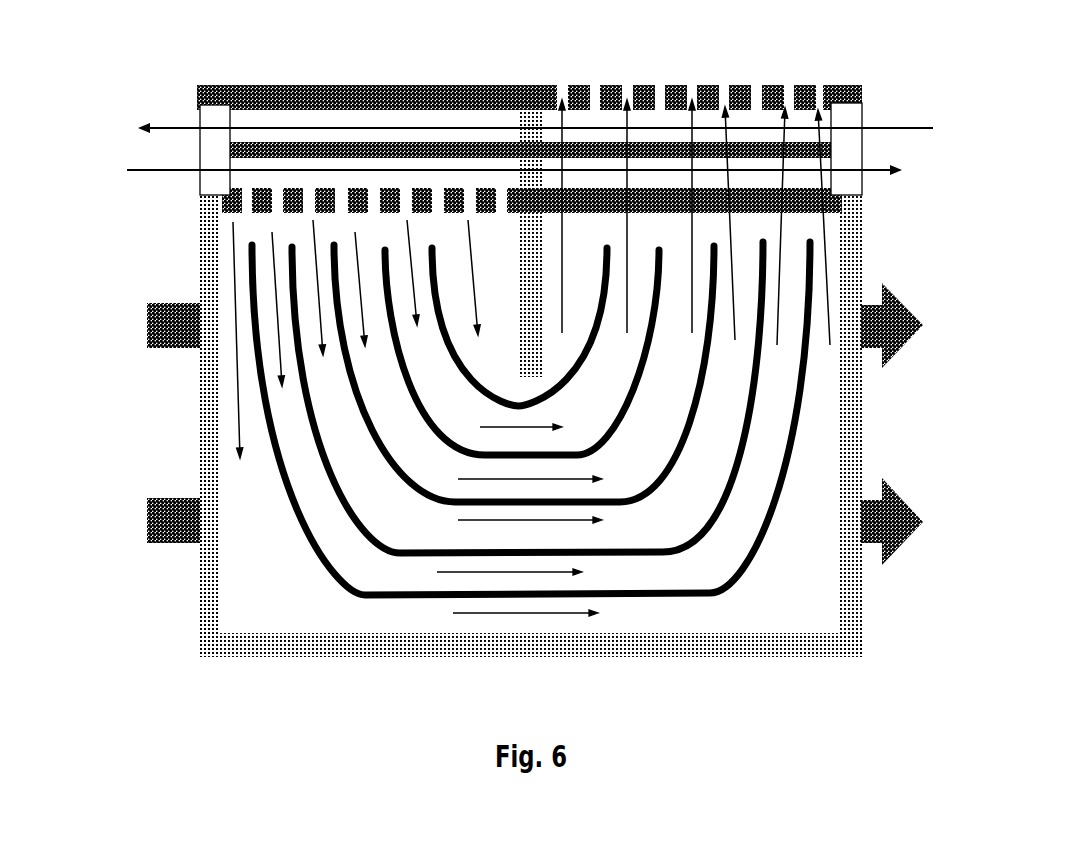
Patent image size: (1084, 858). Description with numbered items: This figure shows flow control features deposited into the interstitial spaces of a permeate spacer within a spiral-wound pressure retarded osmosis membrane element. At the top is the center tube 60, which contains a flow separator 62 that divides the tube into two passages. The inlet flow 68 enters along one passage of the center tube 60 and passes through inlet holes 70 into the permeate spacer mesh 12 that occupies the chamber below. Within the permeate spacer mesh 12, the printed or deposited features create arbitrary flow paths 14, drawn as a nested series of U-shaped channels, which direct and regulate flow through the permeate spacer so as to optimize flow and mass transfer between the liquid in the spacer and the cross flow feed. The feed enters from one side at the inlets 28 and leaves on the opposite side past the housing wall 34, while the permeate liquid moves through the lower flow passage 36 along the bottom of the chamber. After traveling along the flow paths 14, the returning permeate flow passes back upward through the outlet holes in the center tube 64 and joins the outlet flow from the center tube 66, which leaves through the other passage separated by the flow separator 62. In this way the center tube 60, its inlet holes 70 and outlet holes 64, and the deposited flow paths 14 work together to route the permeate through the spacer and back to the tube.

The permeate spacer mesh 12 is at (686, 614).
The flow paths 14 is at (305, 543).
The inlet 28 is at (168, 512).
The housing wall 34 is at (200, 415).
The flow passage 36 is at (478, 614).
The center tube 60 is at (529, 62).
The flow separator 62 is at (791, 148).
The outlet holes in the center tube 64 is at (625, 90).
The outlet flow from the center tube 66 is at (190, 127).
The inlet flow 68 is at (178, 170).
The inlet holes 70 is at (277, 213).